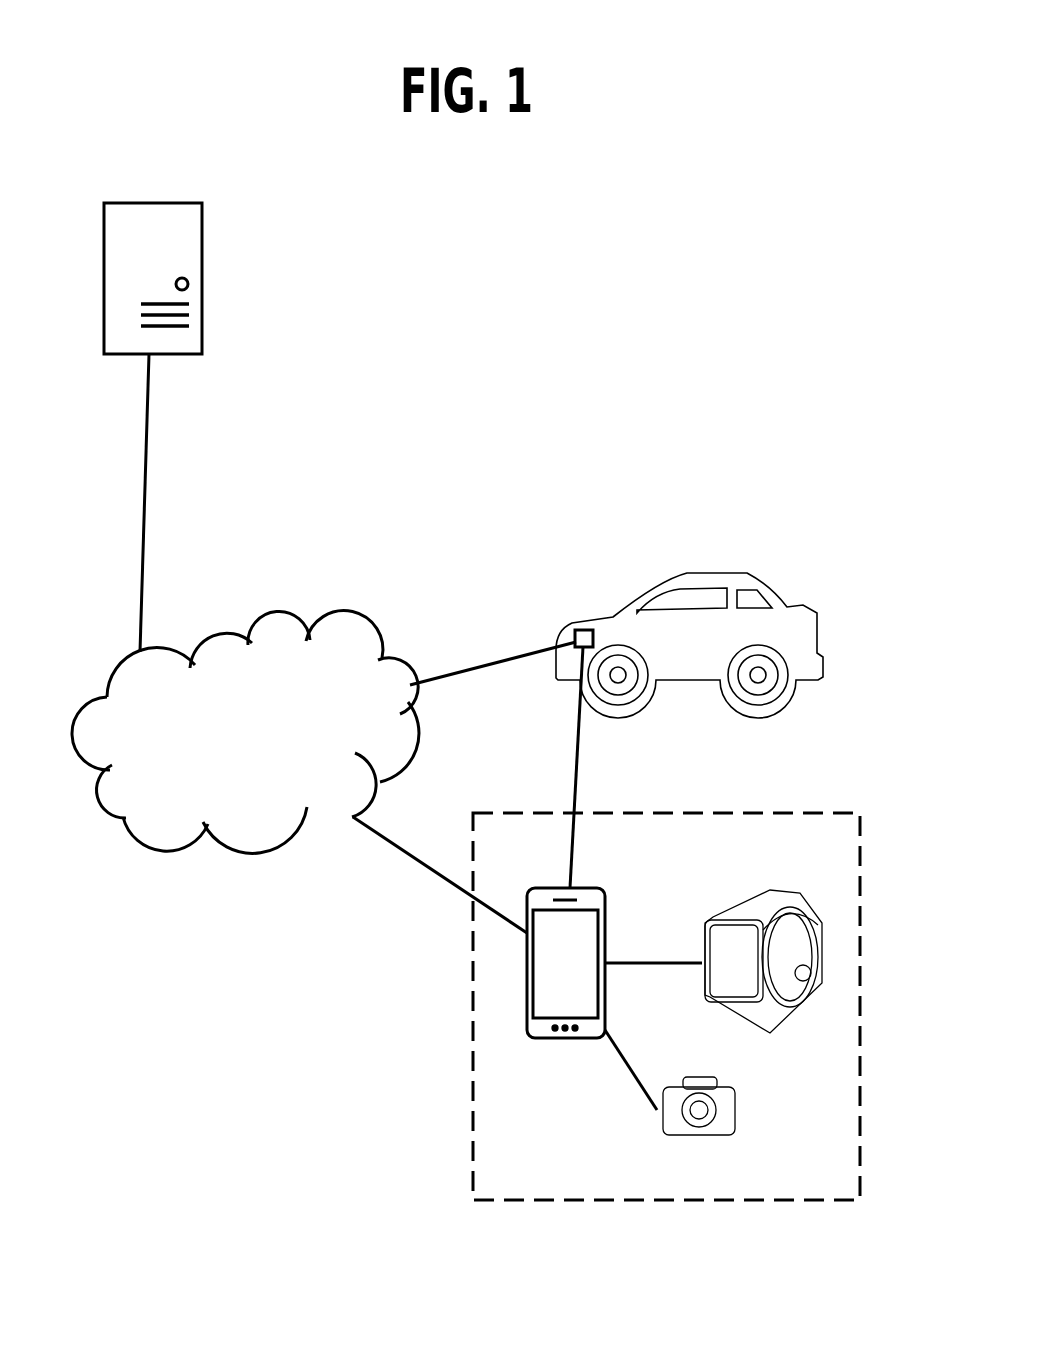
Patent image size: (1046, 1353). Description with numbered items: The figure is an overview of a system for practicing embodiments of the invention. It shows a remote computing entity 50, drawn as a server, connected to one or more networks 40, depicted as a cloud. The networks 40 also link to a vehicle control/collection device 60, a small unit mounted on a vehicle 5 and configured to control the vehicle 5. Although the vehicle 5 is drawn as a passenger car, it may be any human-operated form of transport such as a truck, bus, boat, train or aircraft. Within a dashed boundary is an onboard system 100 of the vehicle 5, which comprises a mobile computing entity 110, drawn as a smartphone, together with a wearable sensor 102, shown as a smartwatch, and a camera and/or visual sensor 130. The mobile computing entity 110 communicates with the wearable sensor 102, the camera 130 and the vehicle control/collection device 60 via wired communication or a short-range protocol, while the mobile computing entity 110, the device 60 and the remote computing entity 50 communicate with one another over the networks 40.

The vehicle 5 is at (678, 572).
The network 40 is at (218, 638).
The remote computing entity 50 is at (167, 203).
The vehicle control/collection device 60 is at (583, 630).
The onboard system 100 is at (752, 812).
The wearable sensor 102 is at (805, 885).
The mobile computing entity 110 is at (605, 888).
The camera and/or visual sensor 130 is at (742, 1117).